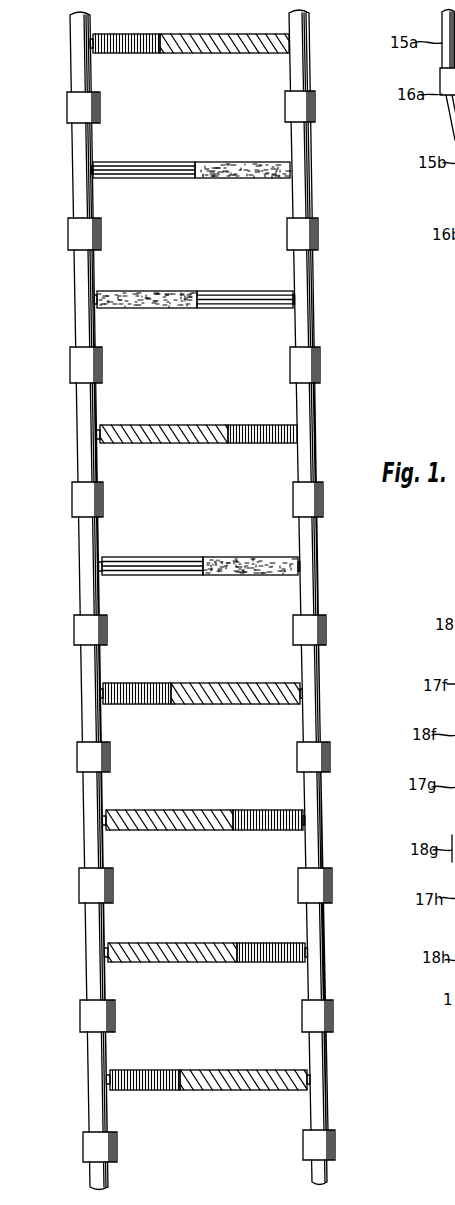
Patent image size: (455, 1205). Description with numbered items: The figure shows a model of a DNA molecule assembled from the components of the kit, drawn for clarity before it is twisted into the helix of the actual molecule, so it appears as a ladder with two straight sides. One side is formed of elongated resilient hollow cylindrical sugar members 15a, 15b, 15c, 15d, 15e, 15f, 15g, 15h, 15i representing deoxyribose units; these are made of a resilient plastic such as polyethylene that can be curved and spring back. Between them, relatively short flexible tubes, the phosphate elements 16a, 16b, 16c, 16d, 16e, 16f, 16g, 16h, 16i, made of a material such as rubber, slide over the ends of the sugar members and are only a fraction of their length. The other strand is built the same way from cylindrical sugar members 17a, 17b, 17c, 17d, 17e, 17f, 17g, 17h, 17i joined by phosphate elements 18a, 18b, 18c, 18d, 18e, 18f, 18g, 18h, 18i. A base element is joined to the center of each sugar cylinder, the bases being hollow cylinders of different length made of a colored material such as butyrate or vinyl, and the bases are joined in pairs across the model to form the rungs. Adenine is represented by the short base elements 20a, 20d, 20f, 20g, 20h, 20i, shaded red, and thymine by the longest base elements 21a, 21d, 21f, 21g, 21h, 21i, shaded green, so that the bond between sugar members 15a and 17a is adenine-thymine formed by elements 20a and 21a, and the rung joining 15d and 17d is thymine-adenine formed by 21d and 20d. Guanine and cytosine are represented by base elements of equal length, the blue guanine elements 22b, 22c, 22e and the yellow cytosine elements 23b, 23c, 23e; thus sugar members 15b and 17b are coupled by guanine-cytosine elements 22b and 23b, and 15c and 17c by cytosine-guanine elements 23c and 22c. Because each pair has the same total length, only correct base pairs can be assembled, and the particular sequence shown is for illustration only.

The sugar member 15a is at (82, 45).
The sugar member 15b is at (78, 173).
The sugar member 15c is at (80, 298).
The sugar member 15d is at (83, 439).
The sugar member 15e is at (87, 568).
The sugar member 15f is at (88, 695).
The sugar member 15g is at (92, 825).
The sugar member 15h is at (100, 947).
The sugar member 15i is at (92, 1073).
The phosphate element 16a is at (77, 107).
The phosphate element 16b is at (78, 238).
The phosphate element 16c is at (77, 366).
The phosphate element 16d is at (80, 500).
The phosphate element 16e is at (80, 636).
The phosphate element 16f is at (83, 765).
The phosphate element 16g is at (82, 892).
The phosphate element 16h is at (90, 1020).
The phosphate element 16i is at (90, 1143).
The sugar member 17a is at (298, 63).
The sugar member 17b is at (303, 188).
The sugar member 17c is at (305, 300).
The sugar member 17d is at (308, 433).
The sugar member 17e is at (305, 565).
The sugar member 17f is at (312, 693).
The sugar member 17g is at (315, 820).
The sugar member 17h is at (315, 943).
The sugar member 17i is at (318, 1068).
The phosphate element 18a is at (305, 107).
The phosphate element 18b is at (308, 236).
The phosphate element 18c is at (310, 362).
The phosphate element 18d is at (310, 498).
The phosphate element 18e is at (310, 628).
The phosphate element 18f is at (312, 755).
The phosphate element 18g is at (315, 883).
The phosphate element 18h is at (318, 1008).
The phosphate element 18i is at (325, 1140).
The base element 20a is at (126, 34).
The base element 20d is at (255, 425).
The base element 20f is at (145, 683).
The base element 20g is at (255, 810).
The base element 20h is at (263, 943).
The base element 20i is at (162, 1070).
The base element 21a is at (215, 34).
The base element 21d is at (145, 425).
The base element 21f is at (235, 683).
The base element 21g is at (158, 810).
The base element 21h is at (170, 943).
The base element 21i is at (243, 1070).
The base element 22b is at (134, 162).
The base element 22c is at (238, 291).
The base element 22e is at (147, 557).
The base element 23b is at (240, 162).
The base element 23c is at (140, 291).
The base element 23e is at (233, 557).